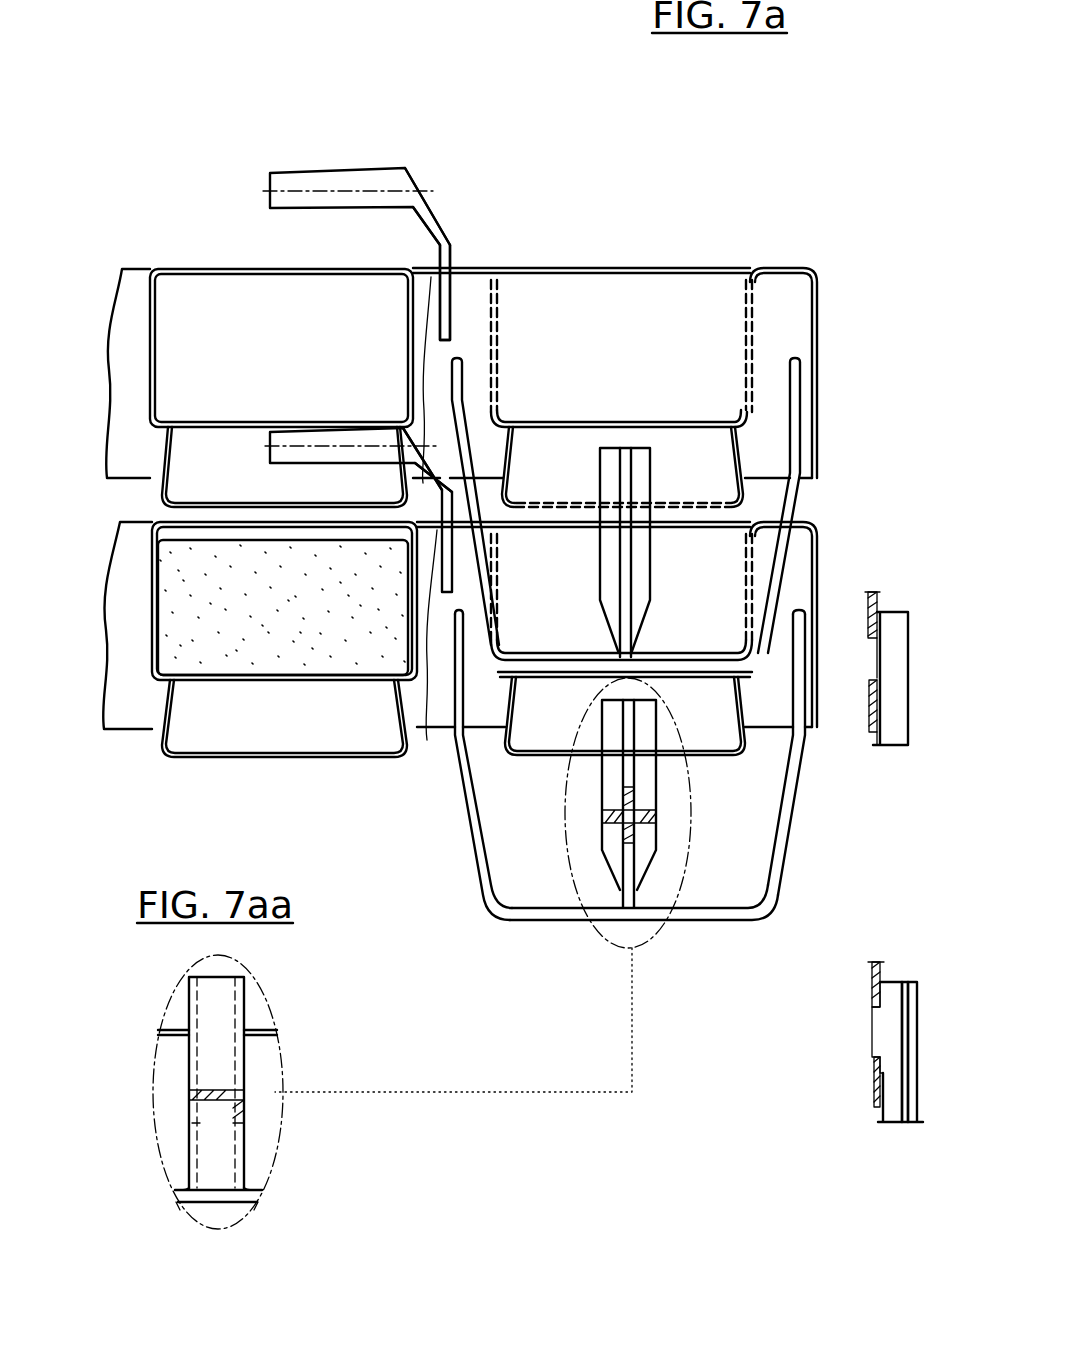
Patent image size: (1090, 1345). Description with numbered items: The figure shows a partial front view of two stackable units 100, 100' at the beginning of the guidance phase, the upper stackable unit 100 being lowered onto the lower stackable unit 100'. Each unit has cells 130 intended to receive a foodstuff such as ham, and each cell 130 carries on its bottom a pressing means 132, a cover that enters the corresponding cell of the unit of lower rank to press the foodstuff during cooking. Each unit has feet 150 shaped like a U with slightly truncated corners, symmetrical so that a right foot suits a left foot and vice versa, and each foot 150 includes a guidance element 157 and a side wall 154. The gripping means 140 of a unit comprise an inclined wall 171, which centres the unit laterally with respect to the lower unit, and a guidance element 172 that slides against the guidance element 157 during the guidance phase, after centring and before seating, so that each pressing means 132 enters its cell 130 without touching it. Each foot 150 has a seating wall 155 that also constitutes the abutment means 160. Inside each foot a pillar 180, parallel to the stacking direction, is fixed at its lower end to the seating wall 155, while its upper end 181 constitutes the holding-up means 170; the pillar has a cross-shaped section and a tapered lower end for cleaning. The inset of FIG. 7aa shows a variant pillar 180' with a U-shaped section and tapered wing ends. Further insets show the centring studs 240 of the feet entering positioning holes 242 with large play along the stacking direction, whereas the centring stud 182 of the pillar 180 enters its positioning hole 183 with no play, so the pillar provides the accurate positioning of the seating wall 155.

In FIG. 7a, the stackable unit 100 is at (449, 247).
In FIG. 7a, the stackable unit 100' is at (413, 593).
In FIG. 7a, the cell 130 is at (286, 357).
In FIG. 7a, the pressing means 132 is at (240, 498).
In FIG. 7a, the gripping means 140 is at (368, 157).
In FIG. 7a, the foot 150 is at (823, 499).
In FIG. 7a, the pocket side wall 154 is at (478, 853).
In FIG. 7a, the seating wall 155 is at (550, 922).
In FIG. 7a, the guidance element 157 is at (502, 430).
In FIG. 7a, the abutment means 160 is at (553, 930).
In FIG. 7a, the holding-up means 170 is at (655, 693).
In FIG. 7a, the inclined wall 171 is at (440, 215).
In FIG. 7a, the guidance element 172 is at (455, 304).
In FIG. 7a, the pillar 180 is at (599, 950).
In FIG. 7aa, the pillar 180' is at (183, 1092).
In FIG. 7a, the upper end 181 is at (892, 978).
In FIG. 7a, the centring stud 182 is at (873, 1033).
In FIG. 7a, the positioning hole 183 is at (873, 983).
In FIG. 7a, the centring stud 240 is at (870, 670).
In FIG. 7a, the positioning hole 242 is at (878, 600).